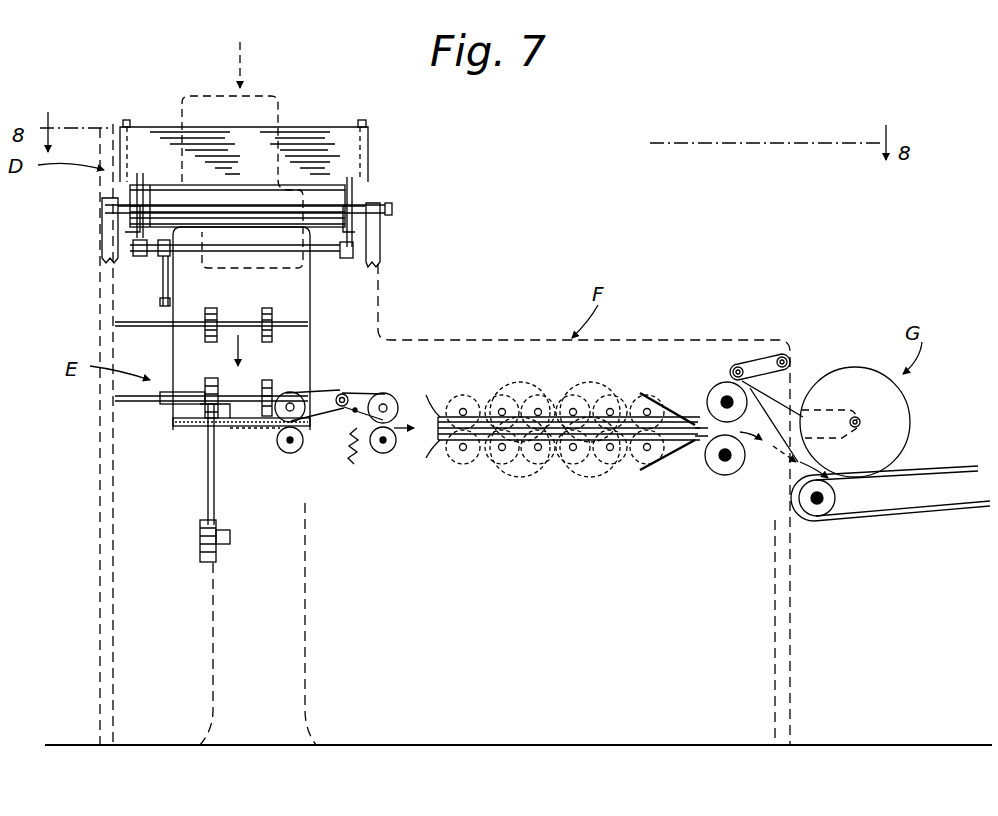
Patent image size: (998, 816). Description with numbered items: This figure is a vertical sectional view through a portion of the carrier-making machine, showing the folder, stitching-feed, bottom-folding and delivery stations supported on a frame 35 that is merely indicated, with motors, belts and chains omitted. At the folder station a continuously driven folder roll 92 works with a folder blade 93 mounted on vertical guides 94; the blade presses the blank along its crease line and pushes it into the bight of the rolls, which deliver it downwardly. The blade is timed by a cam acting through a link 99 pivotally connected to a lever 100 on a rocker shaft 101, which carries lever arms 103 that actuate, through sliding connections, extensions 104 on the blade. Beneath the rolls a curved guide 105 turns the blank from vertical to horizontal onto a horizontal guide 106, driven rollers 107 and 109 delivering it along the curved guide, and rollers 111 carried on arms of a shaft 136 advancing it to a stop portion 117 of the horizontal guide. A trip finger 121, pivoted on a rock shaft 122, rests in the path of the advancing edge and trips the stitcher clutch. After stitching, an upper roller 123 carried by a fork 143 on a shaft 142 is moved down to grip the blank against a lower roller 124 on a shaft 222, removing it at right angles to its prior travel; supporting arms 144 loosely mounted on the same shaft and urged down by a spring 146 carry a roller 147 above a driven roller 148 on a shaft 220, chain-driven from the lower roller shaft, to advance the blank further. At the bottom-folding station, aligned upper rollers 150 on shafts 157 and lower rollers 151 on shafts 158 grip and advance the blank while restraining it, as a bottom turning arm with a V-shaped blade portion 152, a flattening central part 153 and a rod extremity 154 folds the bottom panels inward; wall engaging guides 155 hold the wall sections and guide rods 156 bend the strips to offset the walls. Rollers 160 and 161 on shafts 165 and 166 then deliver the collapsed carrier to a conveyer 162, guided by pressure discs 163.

The frame 35 is at (108, 545).
The folder roll 92 is at (240, 198).
The folder blade 93 is at (340, 157).
The vertical guides 94 is at (125, 188).
The link 99 is at (160, 304).
The lever 100 is at (163, 280).
The rocker shaft 101 is at (325, 255).
The lever arms 103 is at (108, 232).
The extensions 104 is at (137, 220).
The curved guide 105 is at (175, 343).
The horizontal guide 106 is at (263, 440).
The driven roller 107 is at (266, 312).
The driven roller 109 is at (238, 390).
The rollers 111 is at (236, 420).
The stop portion 117 is at (248, 432).
The trip finger 121 is at (222, 498).
The rock shaft 122 is at (232, 540).
The upper roller 123 is at (290, 392).
The lower roller 124 is at (296, 445).
The shaft 136 is at (182, 402).
The shaft 142 is at (349, 396).
The fork 143 is at (320, 400).
The supporting arms 144 is at (354, 412).
The spring 146 is at (352, 466).
The roller 147 is at (390, 396).
The driven roller 148 is at (392, 449).
The upper rollers 150 is at (532, 404).
The lower rollers 151 is at (538, 455).
The blade portion 152 is at (480, 434).
The central part 153 is at (598, 444).
The rod extremity 154 is at (640, 448).
The wall engaging guides 155 is at (682, 410).
The guide rods 156 is at (600, 416).
The shafts 157 is at (652, 400).
The shafts 158 is at (600, 450).
The roller 160 is at (716, 386).
The roller 161 is at (725, 476).
The conveyer 162 is at (948, 470).
The pressure discs 163 is at (895, 400).
The shaft 165 is at (735, 404).
The shaft 166 is at (730, 460).
The shaft 220 is at (383, 450).
The shaft 222 is at (290, 453).